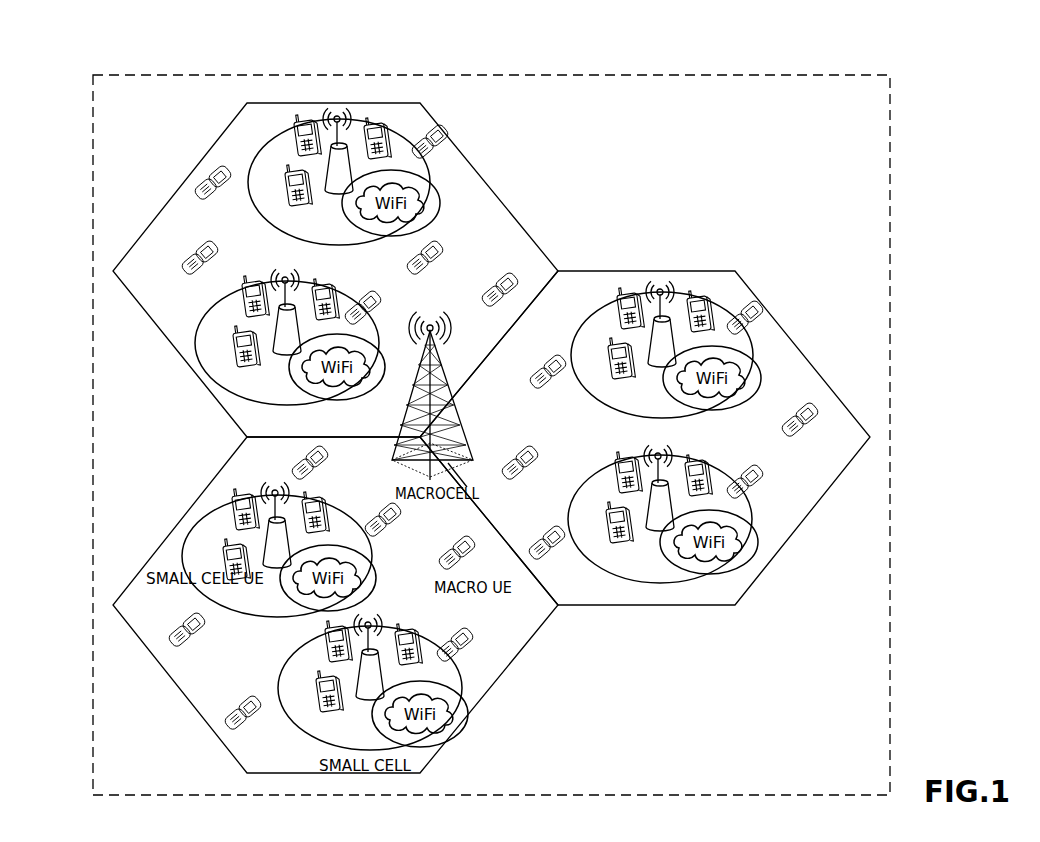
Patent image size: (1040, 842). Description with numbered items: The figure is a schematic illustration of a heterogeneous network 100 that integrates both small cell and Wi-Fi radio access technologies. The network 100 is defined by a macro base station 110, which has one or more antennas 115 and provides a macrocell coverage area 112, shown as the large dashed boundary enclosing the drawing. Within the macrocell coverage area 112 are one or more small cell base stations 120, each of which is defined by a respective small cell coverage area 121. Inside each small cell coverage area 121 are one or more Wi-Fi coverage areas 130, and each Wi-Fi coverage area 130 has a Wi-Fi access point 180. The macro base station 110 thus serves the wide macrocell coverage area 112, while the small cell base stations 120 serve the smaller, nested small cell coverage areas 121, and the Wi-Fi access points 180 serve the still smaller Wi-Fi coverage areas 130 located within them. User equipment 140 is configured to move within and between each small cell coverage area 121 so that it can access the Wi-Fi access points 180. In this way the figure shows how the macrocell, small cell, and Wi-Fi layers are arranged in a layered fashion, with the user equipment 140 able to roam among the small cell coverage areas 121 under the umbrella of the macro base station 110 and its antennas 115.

The network 100 is at (919, 72).
The macro base station 110 is at (452, 417).
The macrocell coverage area 112 is at (893, 433).
The antennas 115 is at (430, 322).
The small cell base station 120 is at (338, 116).
The small cell coverage area 121 is at (265, 284).
The Wi-Fi coverage area 130 is at (438, 202).
The user equipment 140 is at (500, 282).
The Wi-Fi access point 180 is at (343, 385).